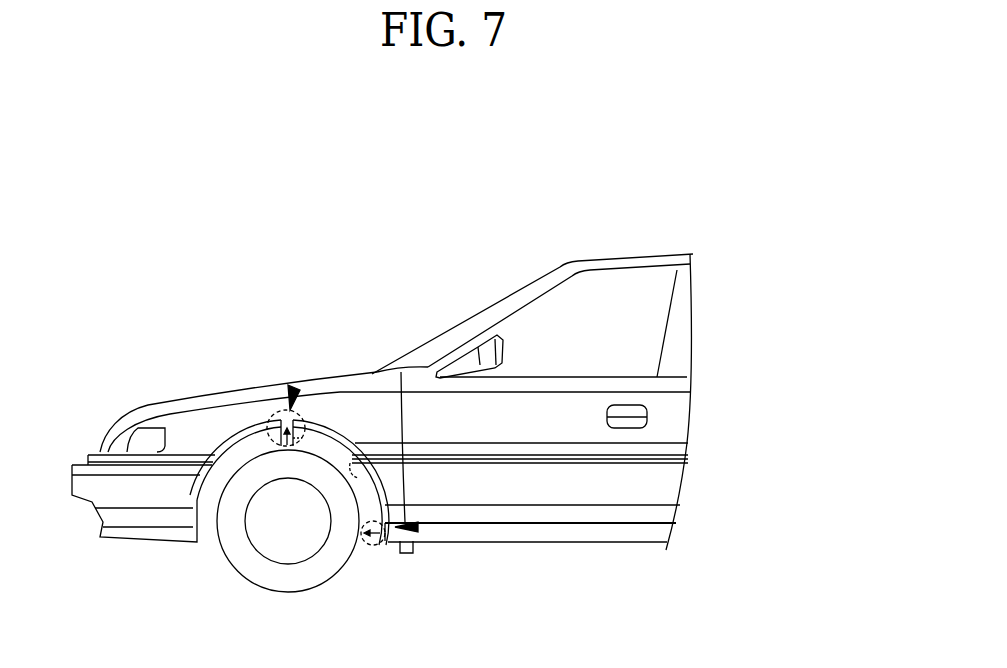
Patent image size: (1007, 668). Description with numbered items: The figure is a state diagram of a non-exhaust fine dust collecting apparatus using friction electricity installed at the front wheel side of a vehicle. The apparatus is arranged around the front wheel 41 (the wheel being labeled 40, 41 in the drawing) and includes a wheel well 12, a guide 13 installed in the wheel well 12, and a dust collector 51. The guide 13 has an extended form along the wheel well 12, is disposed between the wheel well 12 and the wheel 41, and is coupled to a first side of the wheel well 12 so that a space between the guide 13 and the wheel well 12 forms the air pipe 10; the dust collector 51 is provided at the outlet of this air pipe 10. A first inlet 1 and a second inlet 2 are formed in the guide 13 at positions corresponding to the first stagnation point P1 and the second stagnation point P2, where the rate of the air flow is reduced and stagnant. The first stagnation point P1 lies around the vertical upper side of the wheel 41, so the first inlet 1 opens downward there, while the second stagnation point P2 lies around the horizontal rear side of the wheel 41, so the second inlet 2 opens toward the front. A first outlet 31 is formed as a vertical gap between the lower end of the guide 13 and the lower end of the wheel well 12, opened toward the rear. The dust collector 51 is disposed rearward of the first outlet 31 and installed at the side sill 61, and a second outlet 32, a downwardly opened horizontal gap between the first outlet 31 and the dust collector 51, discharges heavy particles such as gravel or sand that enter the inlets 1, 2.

The first inlet 1 is at (305, 443).
The second inlet 2 is at (367, 545).
The air pipe 10 is at (787, 193).
The wheel well 12 is at (234, 450).
The guide 13 is at (357, 456).
The first outlet 31 is at (385, 550).
The second outlet 32 is at (390, 552).
The wheel 40 is at (288, 550).
The front wheel 41 is at (281, 588).
The dust collector 51 is at (392, 538).
The side sill 61 is at (527, 535).
The first stagnation point P1 is at (296, 385).
The second stagnation point P2 is at (419, 528).